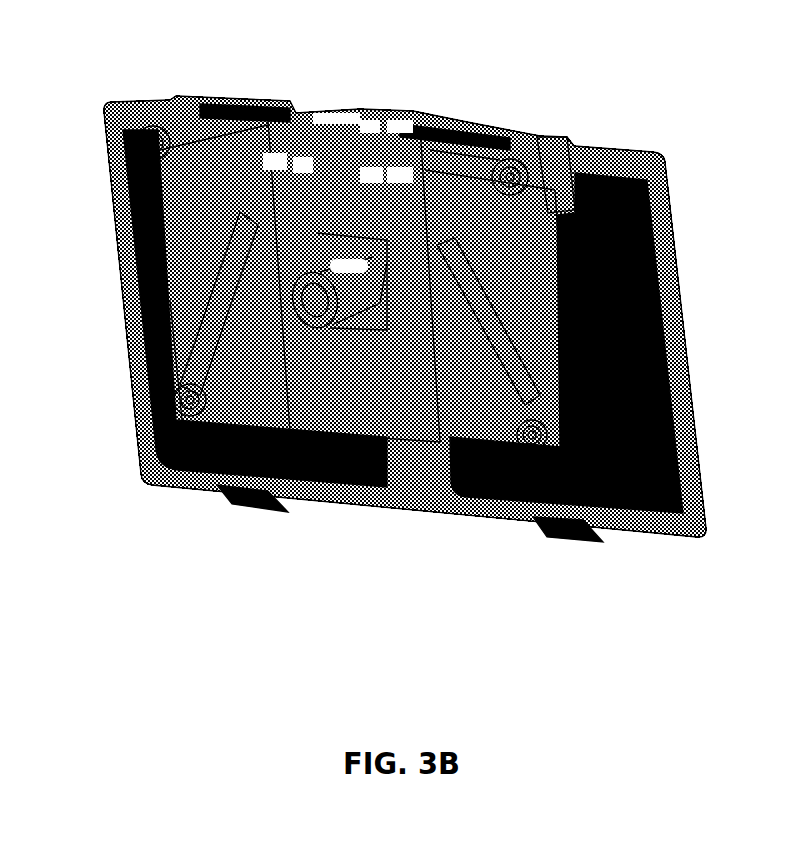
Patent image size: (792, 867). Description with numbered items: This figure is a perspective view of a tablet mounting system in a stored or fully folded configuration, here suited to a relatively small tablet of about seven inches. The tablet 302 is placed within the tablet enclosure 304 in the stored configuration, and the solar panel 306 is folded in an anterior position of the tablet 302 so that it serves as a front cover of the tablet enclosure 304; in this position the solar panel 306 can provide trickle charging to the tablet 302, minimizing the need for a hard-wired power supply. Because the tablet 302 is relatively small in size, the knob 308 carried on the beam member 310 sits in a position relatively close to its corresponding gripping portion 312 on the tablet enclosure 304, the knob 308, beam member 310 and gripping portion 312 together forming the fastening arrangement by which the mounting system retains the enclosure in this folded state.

The tablet 302 is at (677, 370).
The tablet enclosure 304 is at (480, 493).
The solar panel 306 is at (666, 289).
The knob 308 is at (150, 130).
The beam member 310 is at (210, 155).
The gripping portion 312 is at (538, 158).